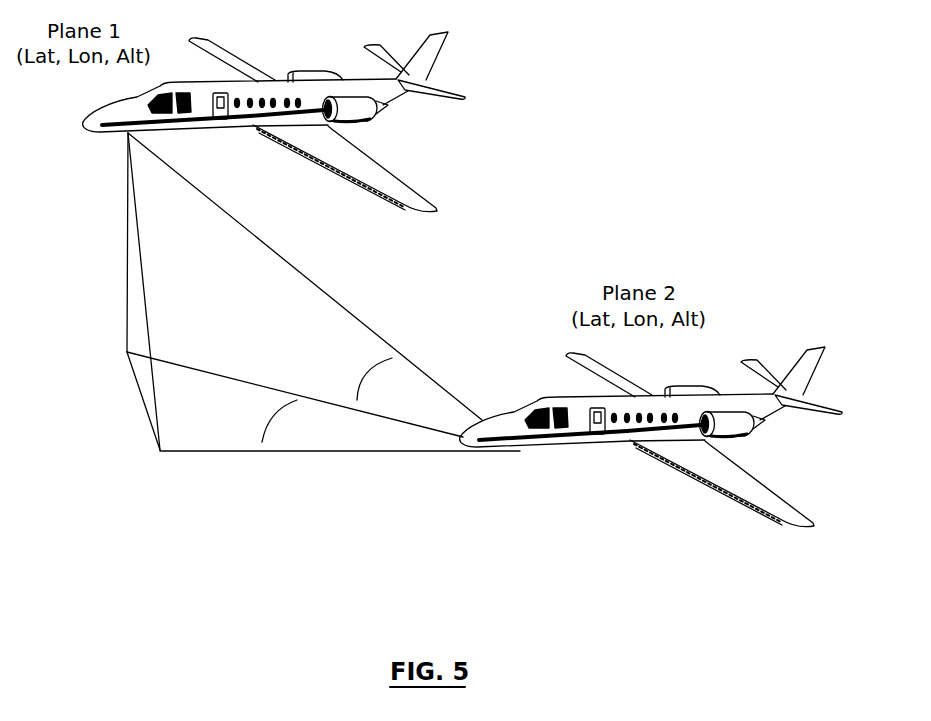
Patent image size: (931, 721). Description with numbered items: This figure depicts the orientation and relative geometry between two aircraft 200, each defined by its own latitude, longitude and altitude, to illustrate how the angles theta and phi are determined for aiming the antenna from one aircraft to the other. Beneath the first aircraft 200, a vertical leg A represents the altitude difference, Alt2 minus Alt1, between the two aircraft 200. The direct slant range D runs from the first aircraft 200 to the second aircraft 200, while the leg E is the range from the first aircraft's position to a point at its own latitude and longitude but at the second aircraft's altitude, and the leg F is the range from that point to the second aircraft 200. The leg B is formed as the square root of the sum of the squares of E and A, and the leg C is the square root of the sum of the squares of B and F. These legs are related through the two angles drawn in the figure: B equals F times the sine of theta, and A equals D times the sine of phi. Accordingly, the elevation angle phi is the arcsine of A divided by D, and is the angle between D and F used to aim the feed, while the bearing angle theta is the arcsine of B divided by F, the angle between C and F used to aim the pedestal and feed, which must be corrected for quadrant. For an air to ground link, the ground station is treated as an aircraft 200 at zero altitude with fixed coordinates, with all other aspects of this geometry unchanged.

The aircraft 200 is at (462, 80).
The altitude difference A is at (119, 242).
The horizontal offset leg B is at (139, 401).
The hypotenuse leg C is at (340, 466).
The range between aircraft D is at (305, 276).
The vertical range leg E is at (150, 291).
The horizontal range leg F is at (295, 394).
The bearing angle theta is at (309, 421).
The elevation angle phi is at (385, 379).